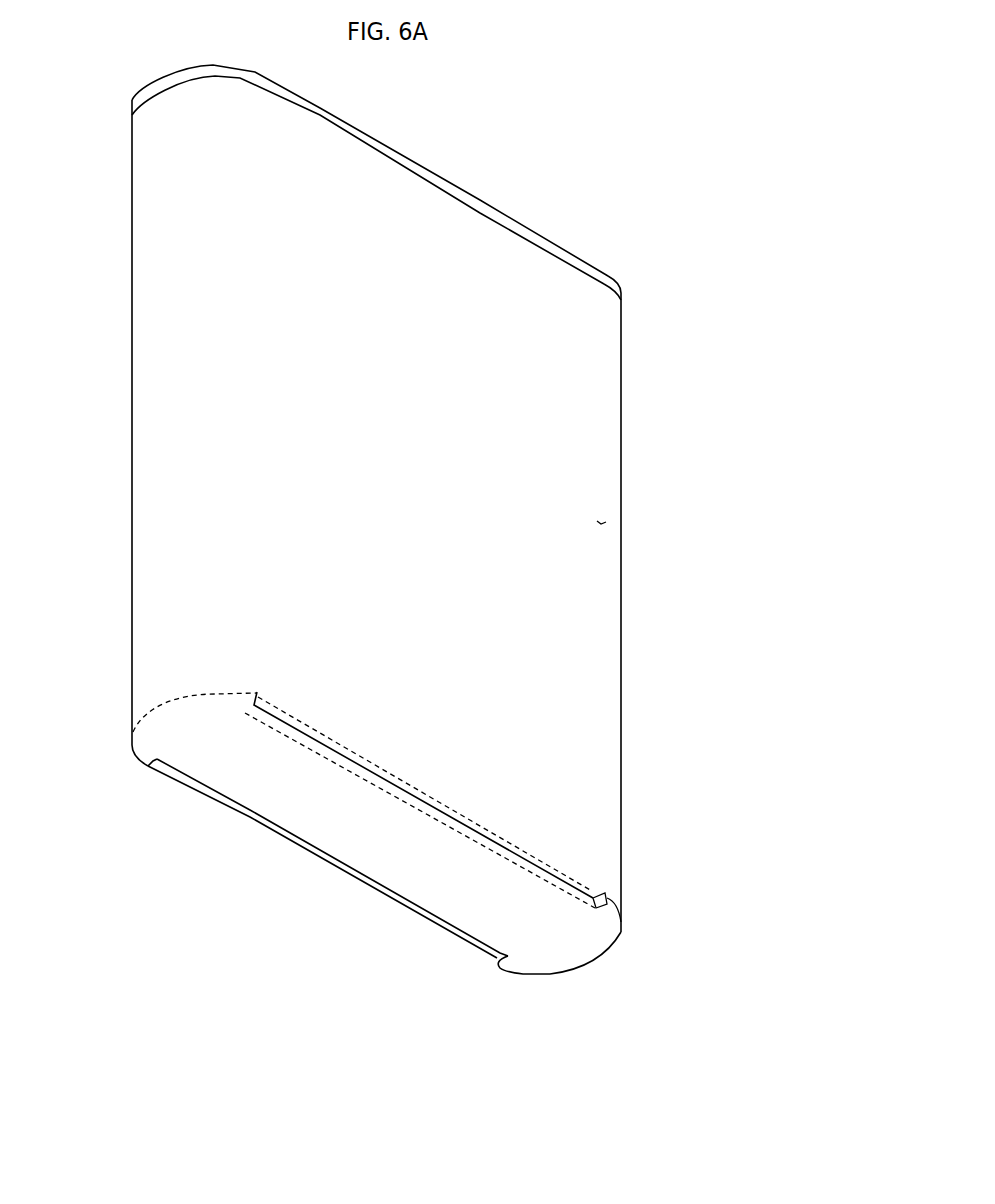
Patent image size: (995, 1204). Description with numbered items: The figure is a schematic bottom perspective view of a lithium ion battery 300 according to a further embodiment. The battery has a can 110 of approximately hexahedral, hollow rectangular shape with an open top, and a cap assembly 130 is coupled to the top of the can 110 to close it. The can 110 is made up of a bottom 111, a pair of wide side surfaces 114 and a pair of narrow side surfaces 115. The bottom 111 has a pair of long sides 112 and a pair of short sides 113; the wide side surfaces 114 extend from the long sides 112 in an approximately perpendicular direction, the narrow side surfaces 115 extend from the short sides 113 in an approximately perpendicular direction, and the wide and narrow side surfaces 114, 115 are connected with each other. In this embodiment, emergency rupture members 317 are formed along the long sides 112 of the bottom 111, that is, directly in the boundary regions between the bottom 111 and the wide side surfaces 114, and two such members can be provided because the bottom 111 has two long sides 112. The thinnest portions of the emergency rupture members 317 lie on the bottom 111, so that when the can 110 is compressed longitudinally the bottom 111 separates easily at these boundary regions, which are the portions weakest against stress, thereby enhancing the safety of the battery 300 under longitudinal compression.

The lithium ion battery 300 is at (648, 84).
The can 110 is at (641, 398).
The bottom 111 is at (548, 960).
The long sides 112 is at (598, 889).
The short sides 113 is at (593, 962).
The wide side surfaces 114 is at (612, 524).
The narrow side surfaces 115 is at (138, 444).
The cap assembly 130 is at (390, 132).
The emergency rupture members 317 is at (362, 763).